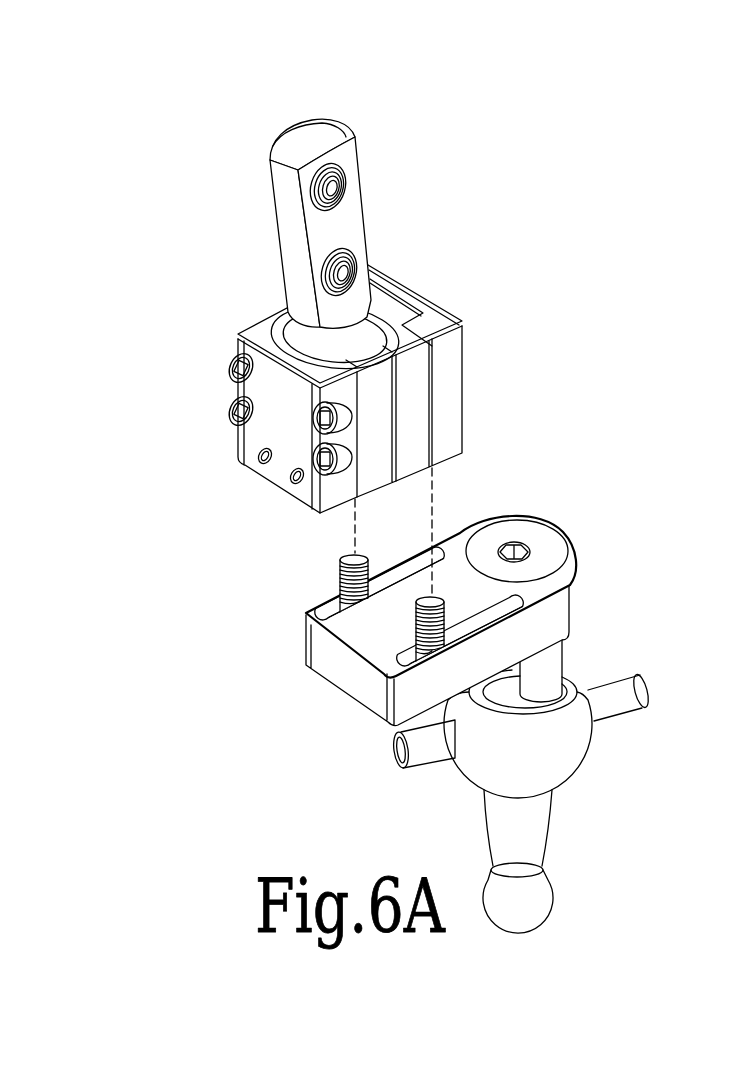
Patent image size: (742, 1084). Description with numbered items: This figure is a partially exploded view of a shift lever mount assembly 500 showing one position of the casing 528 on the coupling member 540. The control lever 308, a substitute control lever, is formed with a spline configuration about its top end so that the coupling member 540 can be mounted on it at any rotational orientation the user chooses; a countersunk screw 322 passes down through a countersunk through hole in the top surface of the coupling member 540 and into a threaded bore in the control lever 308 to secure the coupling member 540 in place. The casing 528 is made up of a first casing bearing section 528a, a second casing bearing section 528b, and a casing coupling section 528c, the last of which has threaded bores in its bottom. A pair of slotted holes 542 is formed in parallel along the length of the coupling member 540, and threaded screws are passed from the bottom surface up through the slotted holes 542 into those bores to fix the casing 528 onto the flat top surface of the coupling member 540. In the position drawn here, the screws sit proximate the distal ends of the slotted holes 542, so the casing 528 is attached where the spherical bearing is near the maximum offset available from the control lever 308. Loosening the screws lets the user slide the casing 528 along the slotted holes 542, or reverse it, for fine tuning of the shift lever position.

The mounting post 500 is at (266, 111).
The casing 528 is at (412, 362).
The first casing bearing section 528a is at (270, 316).
The second casing bearing section 528b is at (413, 310).
The casing coupling section 528c is at (443, 318).
The countersunk screw 322 is at (547, 543).
The coupling member 540 is at (516, 594).
The slotted holes 542 is at (312, 613).
The control lever 308 is at (566, 652).